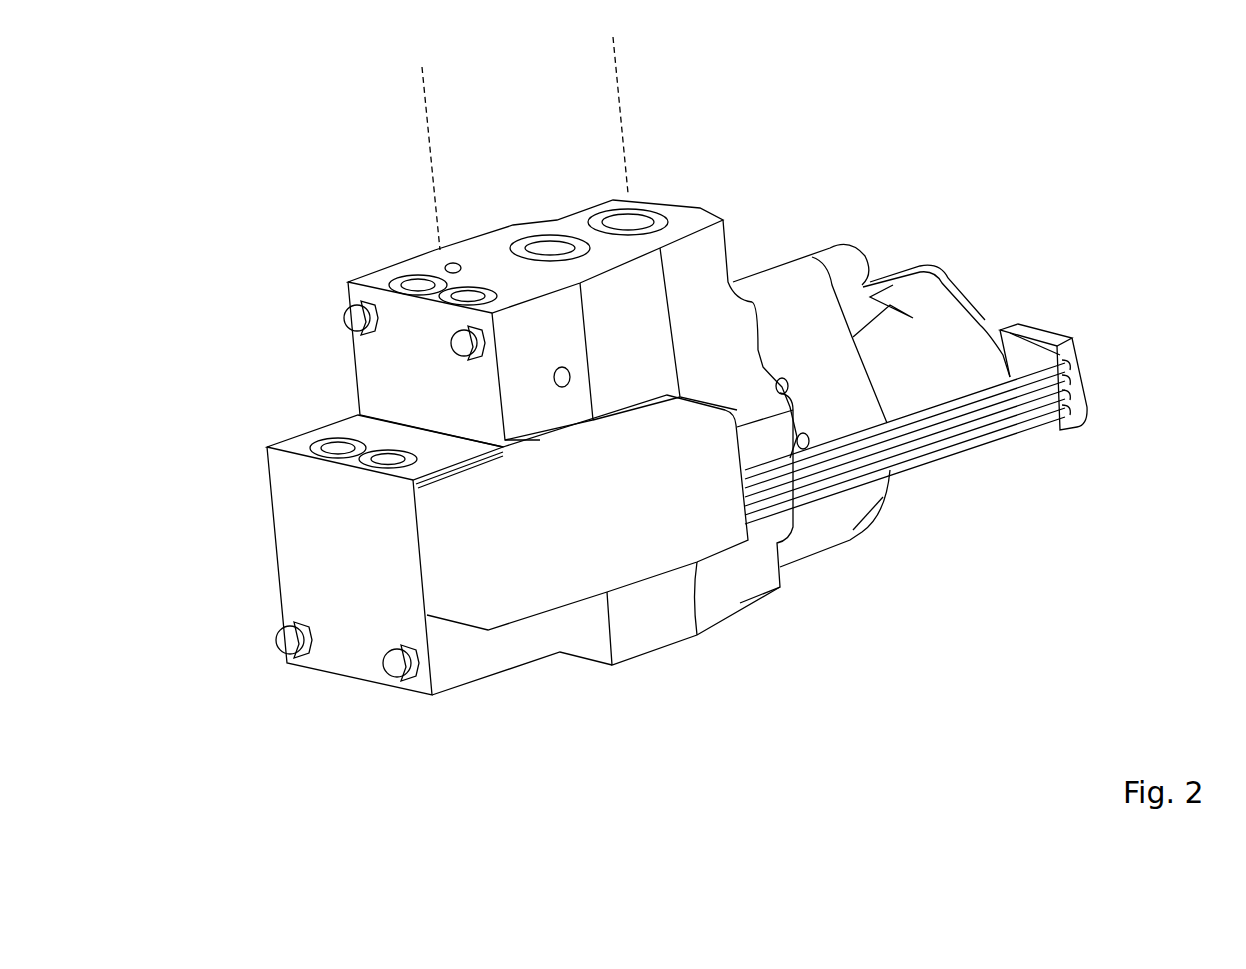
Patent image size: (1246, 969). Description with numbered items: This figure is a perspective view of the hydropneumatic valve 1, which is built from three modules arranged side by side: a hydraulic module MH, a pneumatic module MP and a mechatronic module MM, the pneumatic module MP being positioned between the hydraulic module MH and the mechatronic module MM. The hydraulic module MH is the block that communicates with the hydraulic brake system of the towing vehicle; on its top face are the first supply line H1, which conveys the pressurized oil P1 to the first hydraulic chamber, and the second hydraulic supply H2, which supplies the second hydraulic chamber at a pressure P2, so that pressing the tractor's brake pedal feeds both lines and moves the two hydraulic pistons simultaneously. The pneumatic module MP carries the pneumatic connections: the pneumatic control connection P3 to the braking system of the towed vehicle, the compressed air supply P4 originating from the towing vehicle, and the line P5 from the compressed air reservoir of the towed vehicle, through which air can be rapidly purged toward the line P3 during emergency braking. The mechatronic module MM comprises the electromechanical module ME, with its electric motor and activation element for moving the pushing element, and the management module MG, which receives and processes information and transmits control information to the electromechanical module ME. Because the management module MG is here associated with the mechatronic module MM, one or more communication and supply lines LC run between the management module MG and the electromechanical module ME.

The hydropneumatic valve 1 is at (1047, 607).
The hydraulic module MH is at (480, 422).
The pneumatic module MP is at (650, 271).
The mechatronic module MM is at (871, 324).
The management module MG is at (533, 577).
The communication and supply line LC is at (983, 438).
The electromechanical module ME is at (1080, 405).
The first supply line H1 is at (384, 260).
The pressurized oil P1 is at (423, 287).
The second hydraulic supply H2 is at (293, 418).
The pressure P2 is at (337, 448).
The pneumatic control connection P3 is at (550, 248).
The compressed air supply P4 is at (625, 222).
The line P5 is at (753, 617).